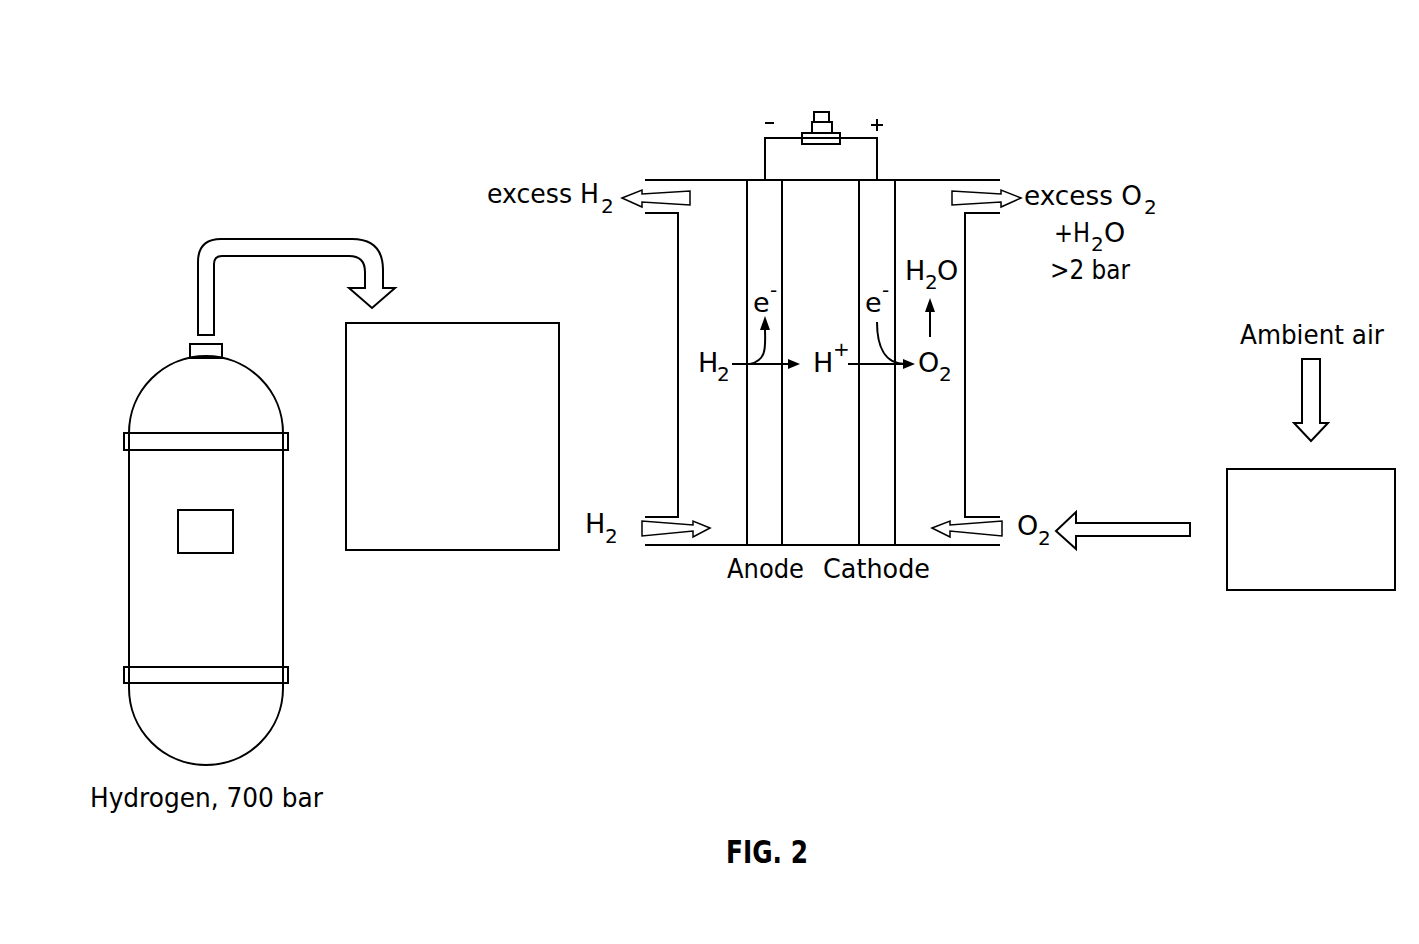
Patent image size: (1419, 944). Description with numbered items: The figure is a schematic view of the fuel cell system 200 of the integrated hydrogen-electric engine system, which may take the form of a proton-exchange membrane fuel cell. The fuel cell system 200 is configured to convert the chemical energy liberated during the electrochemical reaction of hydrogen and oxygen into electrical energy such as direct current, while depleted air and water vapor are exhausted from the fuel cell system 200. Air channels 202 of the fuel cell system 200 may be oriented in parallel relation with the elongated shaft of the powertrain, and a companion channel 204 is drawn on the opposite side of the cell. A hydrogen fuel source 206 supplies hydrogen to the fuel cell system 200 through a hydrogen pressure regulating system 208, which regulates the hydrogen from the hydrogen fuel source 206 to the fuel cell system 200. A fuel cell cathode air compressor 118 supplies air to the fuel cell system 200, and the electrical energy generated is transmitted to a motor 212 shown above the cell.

The fuel cell cathode air compressor 118 is at (1300, 592).
The fuel cell system 200 is at (688, 284).
The air channels 202 is at (687, 427).
The cathode flow channel 204 is at (953, 407).
The hydrogen fuel source 206 is at (153, 377).
The hydrogen pressure regulating system 208 is at (416, 552).
The motor 212 is at (808, 122).